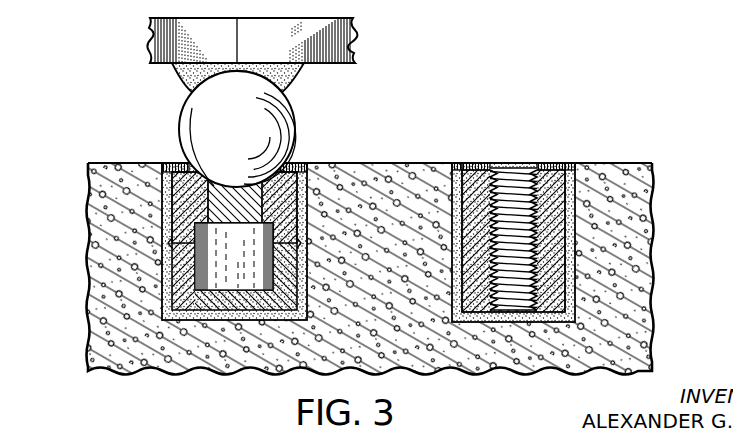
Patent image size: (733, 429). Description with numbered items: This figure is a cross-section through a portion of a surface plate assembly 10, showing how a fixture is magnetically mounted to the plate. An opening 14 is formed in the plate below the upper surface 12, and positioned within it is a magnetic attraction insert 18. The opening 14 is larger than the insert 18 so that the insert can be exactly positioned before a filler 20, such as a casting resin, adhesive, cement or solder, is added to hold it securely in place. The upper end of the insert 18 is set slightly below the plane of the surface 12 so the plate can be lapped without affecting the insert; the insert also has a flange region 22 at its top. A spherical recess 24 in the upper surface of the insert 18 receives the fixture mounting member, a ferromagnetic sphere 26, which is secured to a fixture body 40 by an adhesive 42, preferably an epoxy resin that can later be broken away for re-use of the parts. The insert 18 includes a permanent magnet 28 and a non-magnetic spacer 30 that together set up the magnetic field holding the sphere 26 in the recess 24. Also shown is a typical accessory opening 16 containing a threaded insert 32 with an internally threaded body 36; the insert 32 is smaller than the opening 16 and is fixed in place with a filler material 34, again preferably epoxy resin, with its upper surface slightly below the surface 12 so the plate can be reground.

The anchoring assembly 10 is at (380, 258).
The surface 12 is at (337, 164).
The opening 14 is at (208, 268).
The accessory opening 16 is at (547, 165).
The magnetic attraction insert 18 is at (180, 190).
The filler 20 is at (162, 215).
The left flange 22 is at (177, 165).
The recess 24 is at (212, 162).
The ferromagnetic sphere 26 is at (220, 122).
The permanent magnet 28 is at (160, 262).
The non-magnetic spacer 30 is at (298, 165).
The threaded insert 32 is at (568, 200).
The filler material 34 is at (447, 192).
The threaded insert body 36 is at (481, 166).
The fixture body 40 is at (362, 60).
The adhesive 42 is at (295, 72).